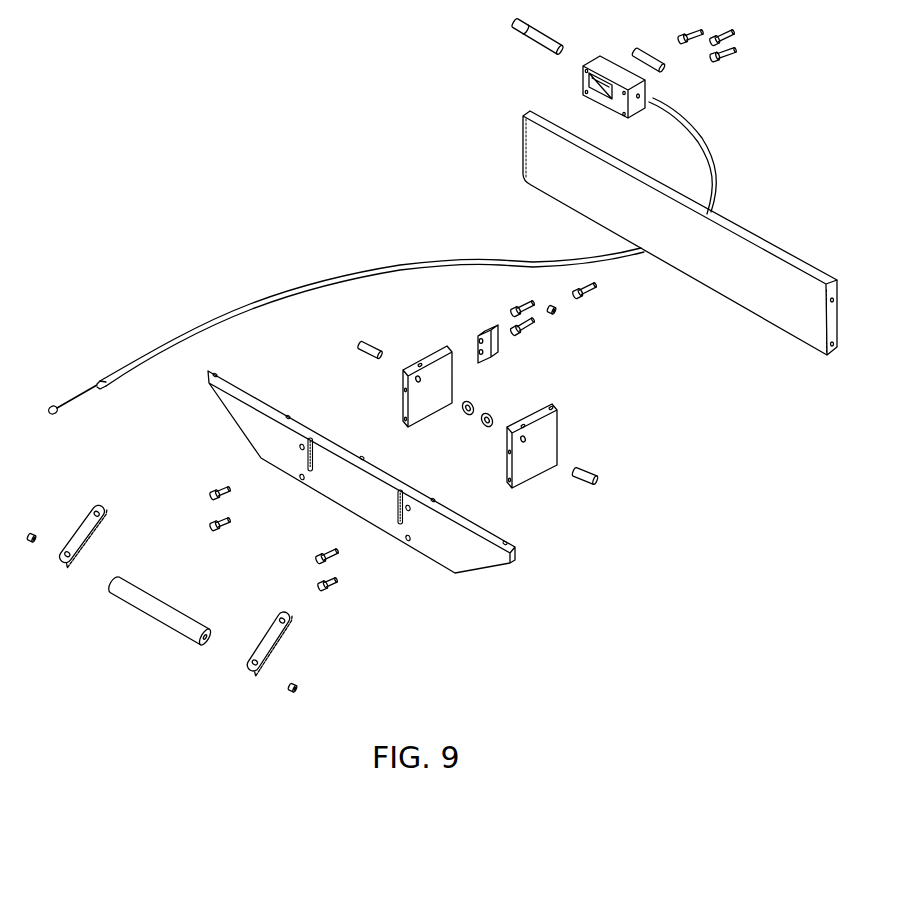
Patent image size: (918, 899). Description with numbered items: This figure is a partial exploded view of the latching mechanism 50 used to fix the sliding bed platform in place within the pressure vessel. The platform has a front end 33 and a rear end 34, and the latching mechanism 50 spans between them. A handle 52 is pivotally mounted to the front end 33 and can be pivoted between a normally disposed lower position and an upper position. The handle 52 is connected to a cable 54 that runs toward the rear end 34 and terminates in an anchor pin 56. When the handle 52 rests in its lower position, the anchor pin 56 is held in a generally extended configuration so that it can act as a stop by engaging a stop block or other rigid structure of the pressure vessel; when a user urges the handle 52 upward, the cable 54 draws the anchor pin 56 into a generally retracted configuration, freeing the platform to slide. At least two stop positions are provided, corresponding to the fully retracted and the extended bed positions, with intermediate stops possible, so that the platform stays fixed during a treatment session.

The front end 33 is at (477, 558).
The rear end 34 is at (763, 300).
The latching mechanism 50 is at (112, 618).
The handle 52 is at (160, 614).
The cable 54 is at (305, 288).
The anchor pin 56 is at (672, 112).